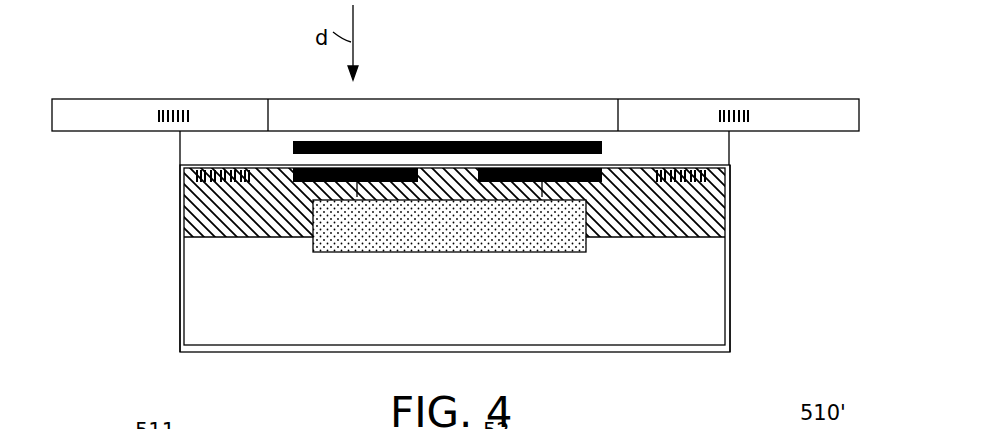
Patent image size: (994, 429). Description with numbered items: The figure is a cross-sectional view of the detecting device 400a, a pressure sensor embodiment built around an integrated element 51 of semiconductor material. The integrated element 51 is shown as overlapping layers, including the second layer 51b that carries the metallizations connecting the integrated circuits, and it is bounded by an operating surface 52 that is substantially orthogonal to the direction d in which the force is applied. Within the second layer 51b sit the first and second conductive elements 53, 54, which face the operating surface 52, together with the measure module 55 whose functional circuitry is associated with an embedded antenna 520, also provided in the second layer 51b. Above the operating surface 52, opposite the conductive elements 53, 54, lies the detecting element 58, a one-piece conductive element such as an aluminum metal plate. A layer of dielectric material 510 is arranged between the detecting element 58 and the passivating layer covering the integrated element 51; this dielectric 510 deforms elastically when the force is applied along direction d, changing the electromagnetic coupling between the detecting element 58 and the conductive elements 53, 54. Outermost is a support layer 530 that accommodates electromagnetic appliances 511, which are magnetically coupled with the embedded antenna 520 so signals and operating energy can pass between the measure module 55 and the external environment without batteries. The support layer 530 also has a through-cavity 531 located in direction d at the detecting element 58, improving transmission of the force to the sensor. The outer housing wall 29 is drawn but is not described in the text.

The detecting device 400a is at (145, 332).
The housing wall 29 is at (730, 280).
The integrated element 51 is at (705, 306).
The second layer 51b is at (180, 215).
The operating surface 52 is at (629, 186).
The first conductive element 53 is at (297, 180).
The second conductive element 54 is at (600, 233).
The measure module 55 is at (352, 240).
The detecting element 58 is at (485, 147).
The layer of dielectric material 510 is at (712, 146).
The electromagnetic appliance 511 is at (174, 104).
The embedded antenna 520 is at (182, 188).
The support layer 530 is at (813, 107).
The through-cavity 531 is at (412, 110).